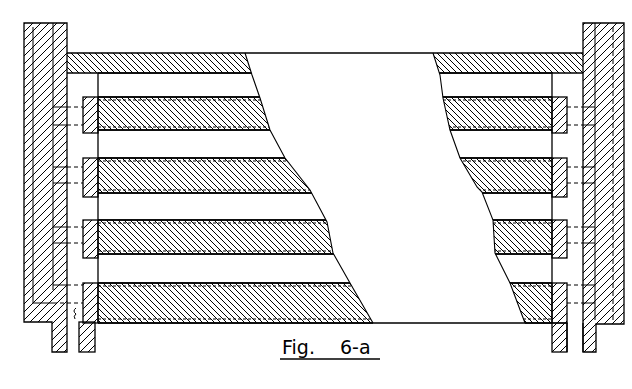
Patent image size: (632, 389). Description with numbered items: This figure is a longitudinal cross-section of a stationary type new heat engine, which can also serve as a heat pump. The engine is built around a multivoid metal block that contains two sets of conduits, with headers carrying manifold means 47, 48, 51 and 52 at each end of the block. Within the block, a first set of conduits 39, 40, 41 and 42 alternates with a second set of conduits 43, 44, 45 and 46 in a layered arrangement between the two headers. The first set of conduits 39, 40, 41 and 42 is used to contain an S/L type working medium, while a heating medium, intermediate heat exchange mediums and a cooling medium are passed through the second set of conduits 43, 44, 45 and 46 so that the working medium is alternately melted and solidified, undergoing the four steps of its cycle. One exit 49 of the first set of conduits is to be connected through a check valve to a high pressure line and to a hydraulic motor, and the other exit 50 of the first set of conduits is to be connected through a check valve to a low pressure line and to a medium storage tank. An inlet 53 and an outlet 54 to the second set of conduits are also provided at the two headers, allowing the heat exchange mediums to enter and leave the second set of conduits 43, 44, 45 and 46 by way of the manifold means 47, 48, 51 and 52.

The first set of conduits 39 is at (325, 86).
The first set of conduits 40 is at (325, 146).
The first set of conduits 41 is at (325, 207).
The first set of conduits 42 is at (325, 268).
The second set of conduits 43 is at (325, 115).
The second set of conduits 44 is at (325, 177).
The second set of conduits 45 is at (325, 239).
The second set of conduits 46 is at (325, 303).
The manifold means 47 is at (99, 325).
The manifold means 48 is at (552, 328).
The exit of the first set of conduits 49 is at (73, 346).
The exit of the first set of conduits 50 is at (577, 343).
The manifold means 51 is at (77, 53).
The manifold means 52 is at (607, 80).
The inlet to the second set of conduits 53 is at (50, 23).
The outlet to the second set of conduits 54 is at (602, 23).